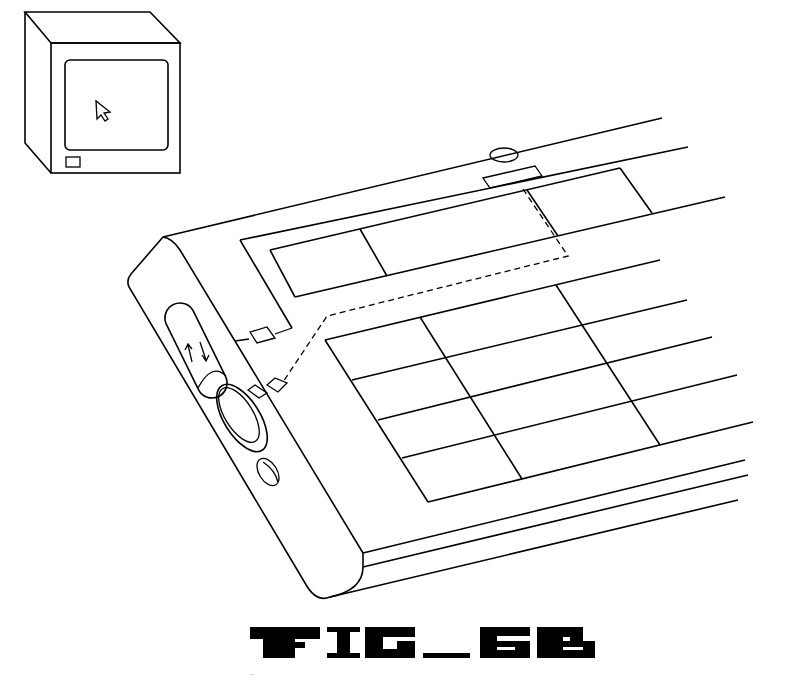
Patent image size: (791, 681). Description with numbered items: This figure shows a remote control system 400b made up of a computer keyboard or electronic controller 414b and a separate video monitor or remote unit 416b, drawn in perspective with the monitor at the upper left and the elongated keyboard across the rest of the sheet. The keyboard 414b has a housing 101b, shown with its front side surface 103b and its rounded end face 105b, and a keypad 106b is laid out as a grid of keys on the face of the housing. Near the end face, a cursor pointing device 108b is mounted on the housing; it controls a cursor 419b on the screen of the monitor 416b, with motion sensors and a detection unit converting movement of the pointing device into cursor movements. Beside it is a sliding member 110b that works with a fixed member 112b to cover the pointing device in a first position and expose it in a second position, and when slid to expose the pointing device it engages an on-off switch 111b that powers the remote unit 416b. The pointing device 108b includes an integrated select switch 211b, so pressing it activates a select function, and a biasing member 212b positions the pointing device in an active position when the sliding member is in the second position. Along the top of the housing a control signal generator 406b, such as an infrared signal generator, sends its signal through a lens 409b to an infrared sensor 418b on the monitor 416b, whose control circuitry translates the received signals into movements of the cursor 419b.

The remote control system 400b is at (566, 85).
The housing 101b is at (648, 118).
The front side surface 103b is at (385, 530).
The end face 105b is at (155, 282).
The keypad 106b is at (683, 328).
The cursor pointing device 108b is at (223, 420).
The sliding member 110b is at (187, 358).
The on-off switch 111b is at (253, 330).
The fixed member 112b is at (260, 482).
The select switch 211b is at (283, 388).
The biasing member 212b is at (262, 397).
The control signal generator 406b is at (533, 174).
The lens 409b is at (498, 152).
The computer keyboard 414b is at (608, 540).
The video monitor 416b is at (183, 51).
The infrared sensor 418b is at (78, 168).
The cursor 419b is at (101, 103).